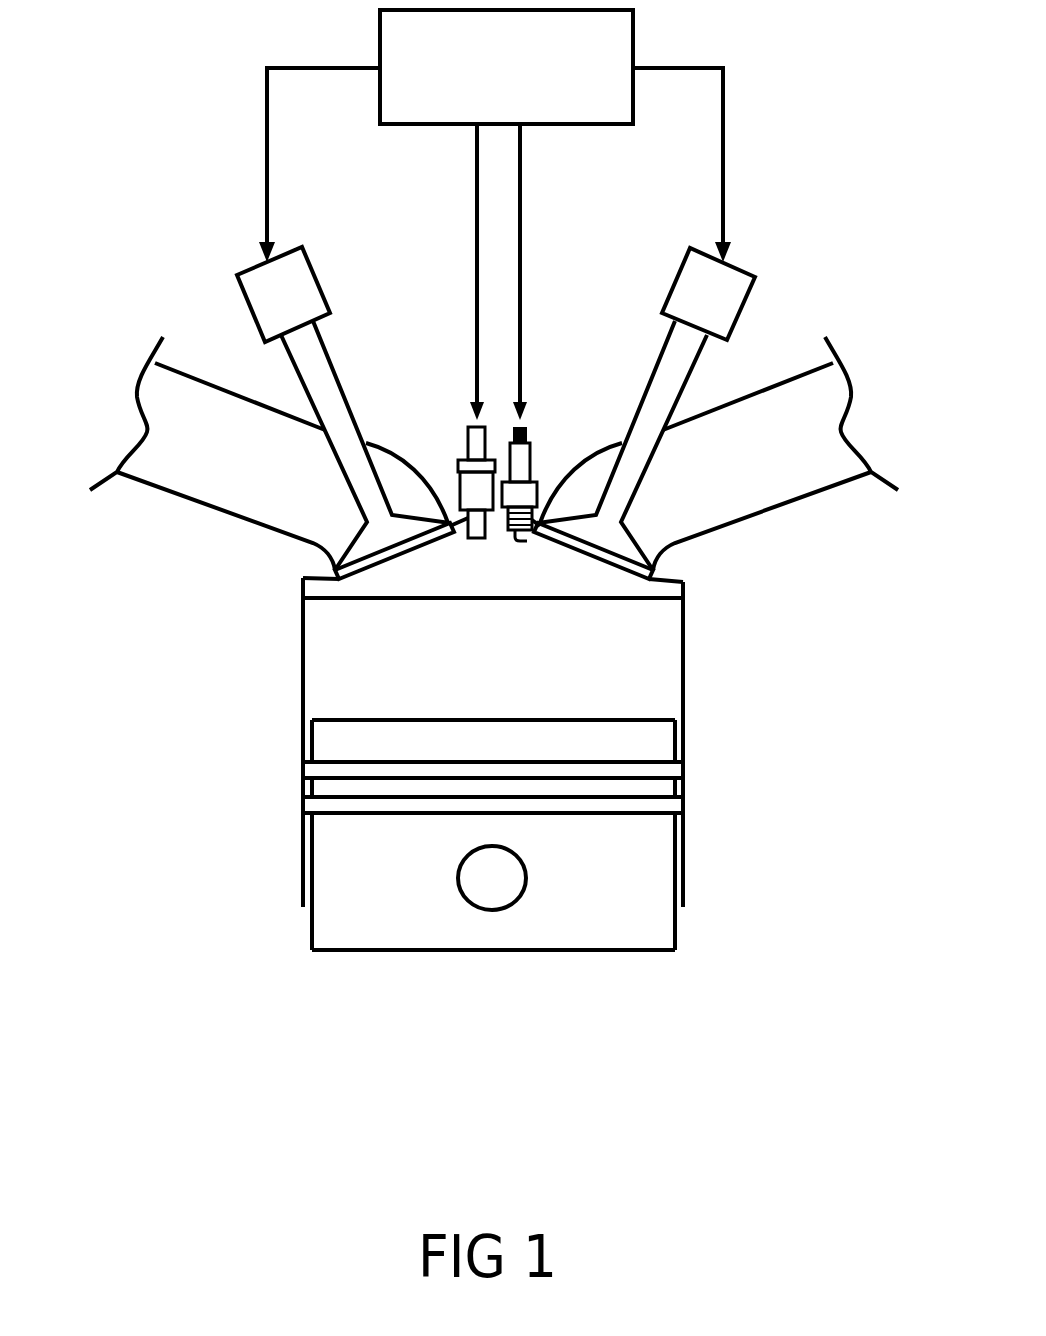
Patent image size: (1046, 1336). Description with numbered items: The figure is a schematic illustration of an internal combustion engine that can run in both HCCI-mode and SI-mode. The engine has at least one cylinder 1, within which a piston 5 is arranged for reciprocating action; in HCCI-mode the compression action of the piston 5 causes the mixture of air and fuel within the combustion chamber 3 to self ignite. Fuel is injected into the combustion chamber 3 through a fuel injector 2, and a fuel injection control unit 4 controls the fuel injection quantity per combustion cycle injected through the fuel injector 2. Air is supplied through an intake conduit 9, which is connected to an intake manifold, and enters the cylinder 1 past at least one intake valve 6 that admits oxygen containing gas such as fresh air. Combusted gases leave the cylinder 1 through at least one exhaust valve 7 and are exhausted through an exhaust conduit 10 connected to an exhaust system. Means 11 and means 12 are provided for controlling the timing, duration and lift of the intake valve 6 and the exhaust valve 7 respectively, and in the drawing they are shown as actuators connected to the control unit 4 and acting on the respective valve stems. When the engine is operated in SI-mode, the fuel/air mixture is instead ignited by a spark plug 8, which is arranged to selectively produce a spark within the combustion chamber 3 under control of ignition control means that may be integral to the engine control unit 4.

The cylinder 1 is at (302, 678).
The fuel injector 2 is at (478, 498).
The combustion chamber 3 is at (489, 682).
The fuel injection control unit 4 is at (493, 90).
The piston 5 is at (680, 922).
The intake valve 6 is at (303, 383).
The exhaust valve 7 is at (688, 380).
The spark plug 8 is at (527, 490).
The intake conduit 9 is at (160, 488).
The exhaust conduit 10 is at (760, 512).
The intake valve control means 11 is at (285, 287).
The exhaust valve control means 12 is at (717, 287).